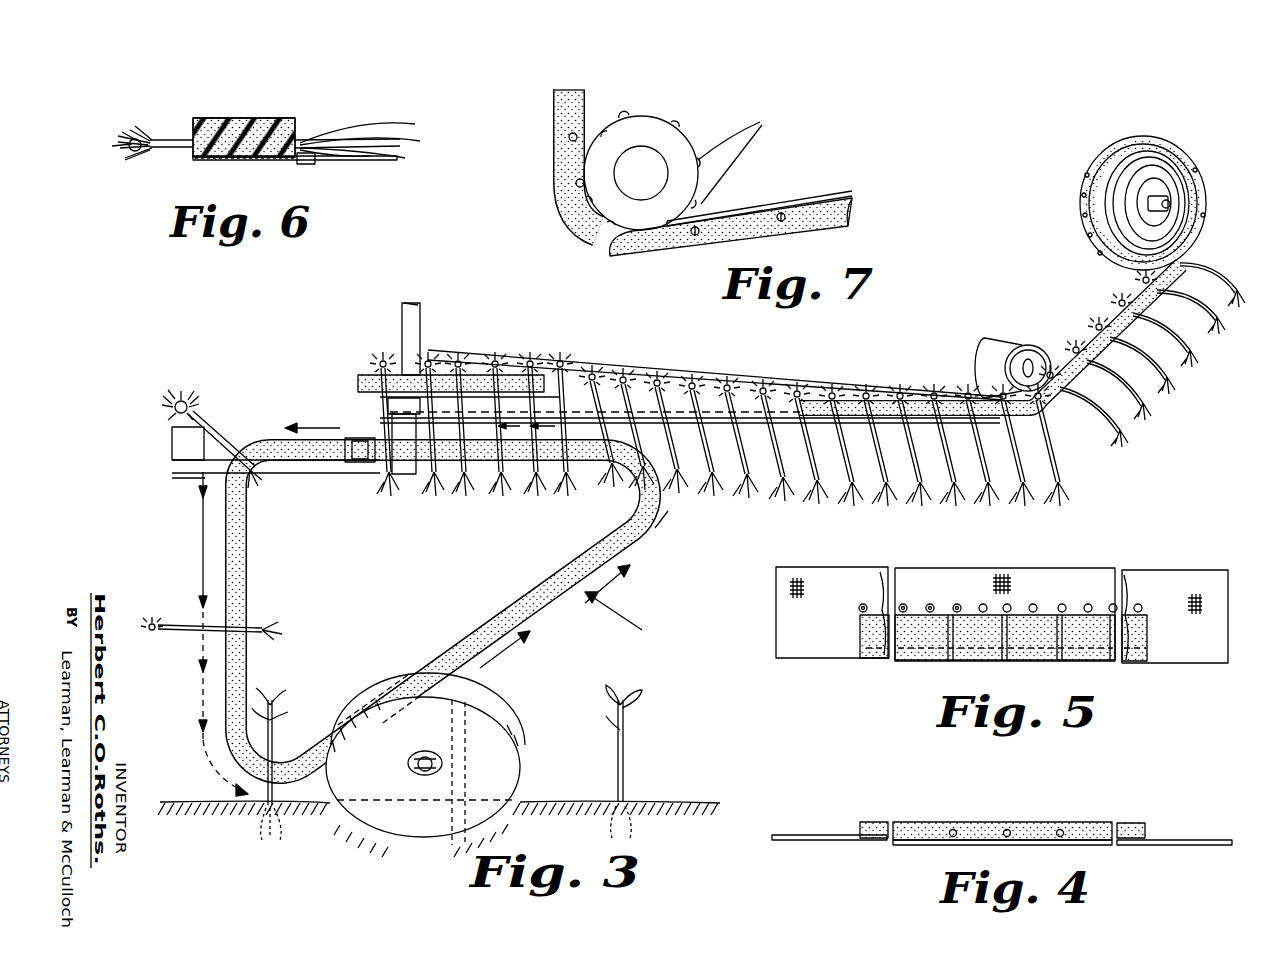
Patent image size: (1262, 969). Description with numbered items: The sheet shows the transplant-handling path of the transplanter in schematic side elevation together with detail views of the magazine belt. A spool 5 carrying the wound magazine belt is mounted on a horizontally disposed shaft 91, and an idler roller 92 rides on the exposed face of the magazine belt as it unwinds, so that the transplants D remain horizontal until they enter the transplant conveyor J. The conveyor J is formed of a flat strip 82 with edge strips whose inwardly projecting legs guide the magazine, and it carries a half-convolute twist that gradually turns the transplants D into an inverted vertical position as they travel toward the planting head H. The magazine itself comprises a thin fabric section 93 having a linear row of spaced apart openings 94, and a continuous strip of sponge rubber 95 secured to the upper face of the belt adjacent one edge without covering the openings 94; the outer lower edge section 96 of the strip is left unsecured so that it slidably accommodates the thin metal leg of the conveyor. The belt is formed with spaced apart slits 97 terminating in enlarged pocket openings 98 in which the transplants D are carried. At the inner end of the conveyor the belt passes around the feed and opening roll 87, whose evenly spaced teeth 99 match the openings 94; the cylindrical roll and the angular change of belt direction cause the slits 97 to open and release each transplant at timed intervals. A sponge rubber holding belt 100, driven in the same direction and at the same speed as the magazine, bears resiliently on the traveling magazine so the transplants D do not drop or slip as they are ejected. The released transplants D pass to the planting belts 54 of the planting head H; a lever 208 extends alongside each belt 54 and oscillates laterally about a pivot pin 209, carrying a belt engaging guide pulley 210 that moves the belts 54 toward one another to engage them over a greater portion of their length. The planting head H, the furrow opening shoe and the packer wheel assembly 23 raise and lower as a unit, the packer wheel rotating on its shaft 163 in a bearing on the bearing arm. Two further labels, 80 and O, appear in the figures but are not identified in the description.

In FIG. 3, the rake wheel 5 is at (1078, 190).
In FIG. 3, the packer wheel assemblies 23 is at (397, 812).
In FIG. 3, the planting belt 54 is at (222, 524).
In FIG. 3, the guide plate 80 is at (780, 380).
In FIG. 5, the flat strip 82 is at (806, 660).
In FIG. 4, the flat strip 82 is at (812, 842).
In FIG. 7, the feed and opening roll 87 is at (606, 181).
In FIG. 3, the horizontally disposed shaft 91 is at (1162, 198).
In FIG. 3, the idler roller 92 is at (1010, 340).
In FIG. 6, the fabric section 93 is at (361, 160).
In FIG. 7, the fabric section 93 is at (843, 196).
In FIG. 5, the fabric section 93 is at (1194, 656).
In FIG. 4, the fabric section 93 is at (1172, 838).
In FIG. 6, the openings 94 is at (311, 163).
In FIG. 5, the openings 94 is at (958, 606).
In FIG. 3, the strip of sponge rubber 95 is at (926, 400).
In FIG. 6, the strip of sponge rubber 95 is at (263, 128).
In FIG. 7, the strip of sponge rubber 95 is at (855, 210).
In FIG. 5, the strip of sponge rubber 95 is at (925, 655).
In FIG. 4, the strip of sponge rubber 95 is at (980, 824).
In FIG. 6, the outer lower edge section 96 is at (213, 158).
In FIG. 5, the outer lower edge section 96 is at (1036, 652).
In FIG. 7, the slits 97 is at (569, 140).
In FIG. 5, the slits 97 is at (1068, 625).
In FIG. 4, the slits 97 is at (1062, 830).
In FIG. 7, the pocket openings 98 is at (781, 212).
In FIG. 4, the pocket openings 98 is at (905, 845).
In FIG. 7, the teeth 99 is at (745, 152).
In FIG. 3, the holding belt assembly 100 is at (482, 376).
In FIG. 3, the shaft of the packer wheel 163 is at (429, 770).
In FIG. 3, the lever 208 is at (322, 475).
In FIG. 3, the pivot pins 209 is at (182, 445).
In FIG. 3, the belt engaging guide pulleys 210 is at (355, 438).
In FIG. 3, the transplants D is at (200, 418).
In FIG. 3, the planting head H is at (574, 589).
In FIG. 3, the transplant conveyor J is at (730, 378).
In FIG. 3, the plant stem O is at (628, 775).
In FIG. 6, the plant stem O is at (327, 141).